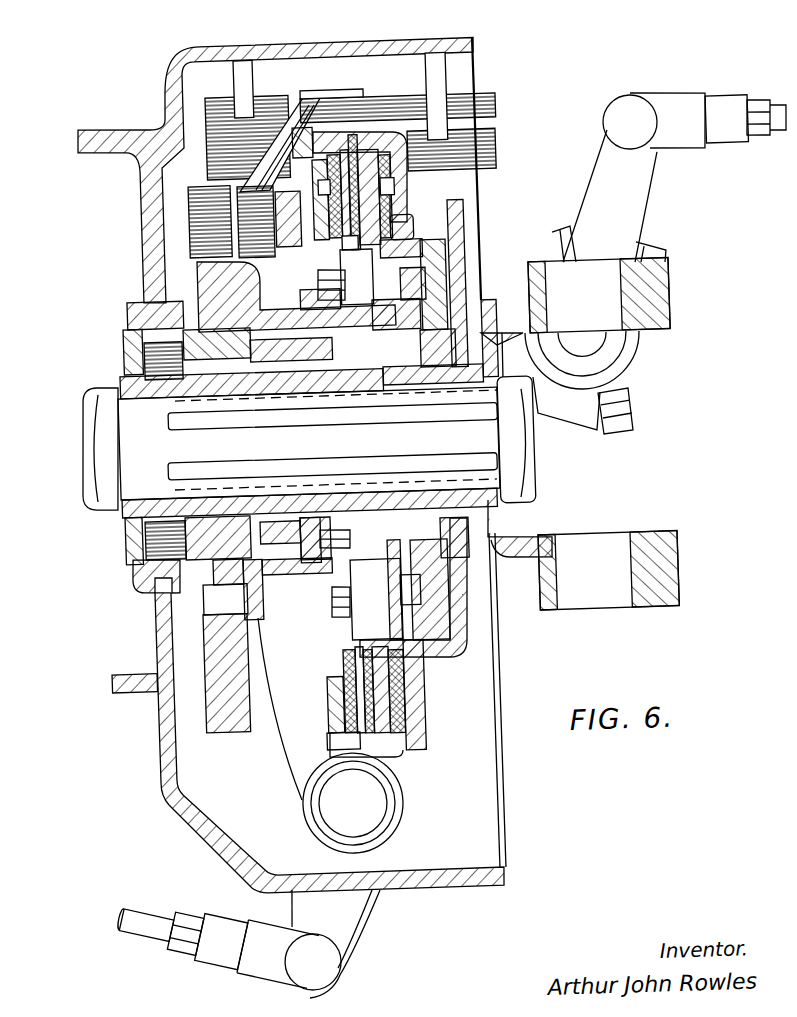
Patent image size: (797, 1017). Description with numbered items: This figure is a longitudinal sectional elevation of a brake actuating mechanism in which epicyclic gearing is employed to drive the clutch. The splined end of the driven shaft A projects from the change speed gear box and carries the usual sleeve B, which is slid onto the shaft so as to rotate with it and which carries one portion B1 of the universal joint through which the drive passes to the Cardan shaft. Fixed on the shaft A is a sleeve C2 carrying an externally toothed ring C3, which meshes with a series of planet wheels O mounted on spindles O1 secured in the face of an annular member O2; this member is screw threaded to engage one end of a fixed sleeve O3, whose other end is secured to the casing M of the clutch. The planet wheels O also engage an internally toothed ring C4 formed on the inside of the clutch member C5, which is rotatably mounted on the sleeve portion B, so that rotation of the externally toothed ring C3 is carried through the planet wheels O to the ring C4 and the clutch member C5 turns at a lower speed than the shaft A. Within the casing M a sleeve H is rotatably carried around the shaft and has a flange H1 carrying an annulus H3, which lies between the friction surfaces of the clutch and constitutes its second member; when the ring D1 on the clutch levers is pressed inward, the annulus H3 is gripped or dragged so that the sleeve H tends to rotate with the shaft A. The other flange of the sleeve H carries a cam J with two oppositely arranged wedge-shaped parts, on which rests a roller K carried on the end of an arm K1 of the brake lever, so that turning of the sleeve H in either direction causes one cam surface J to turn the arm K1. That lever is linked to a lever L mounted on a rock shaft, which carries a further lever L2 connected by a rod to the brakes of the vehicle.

The casing M is at (158, 714).
The arm of lever K1 is at (288, 138).
The clutch member C5 is at (415, 152).
The roller K is at (203, 206).
The annular member O2 is at (452, 236).
The internally toothed ring C4 is at (447, 262).
The planet wheels O is at (444, 278).
The spindles O1 is at (433, 303).
The externally toothed ring C3 is at (460, 316).
The lever L2 is at (633, 207).
The lever L is at (552, 297).
The driven shaft A is at (290, 443).
The sleeve C2 is at (282, 502).
The sleeve B is at (472, 504).
The portion of universal joint B1 is at (645, 578).
The fixed sleeve O3 is at (130, 550).
The cam J is at (222, 707).
The sleeve H is at (294, 565).
The flange H1 is at (425, 628).
The annulus H3 is at (376, 679).
The ring D1 is at (328, 700).